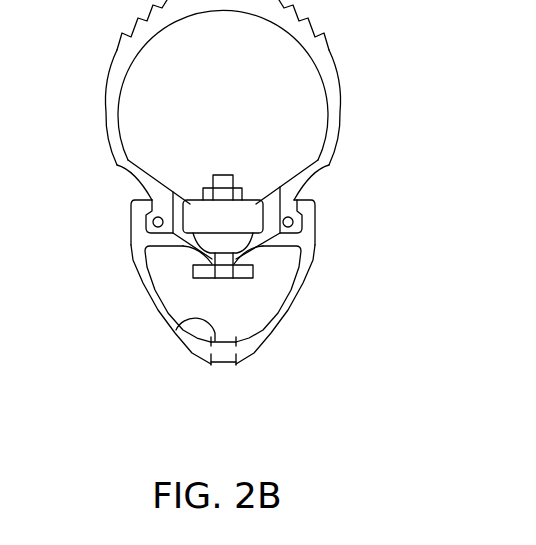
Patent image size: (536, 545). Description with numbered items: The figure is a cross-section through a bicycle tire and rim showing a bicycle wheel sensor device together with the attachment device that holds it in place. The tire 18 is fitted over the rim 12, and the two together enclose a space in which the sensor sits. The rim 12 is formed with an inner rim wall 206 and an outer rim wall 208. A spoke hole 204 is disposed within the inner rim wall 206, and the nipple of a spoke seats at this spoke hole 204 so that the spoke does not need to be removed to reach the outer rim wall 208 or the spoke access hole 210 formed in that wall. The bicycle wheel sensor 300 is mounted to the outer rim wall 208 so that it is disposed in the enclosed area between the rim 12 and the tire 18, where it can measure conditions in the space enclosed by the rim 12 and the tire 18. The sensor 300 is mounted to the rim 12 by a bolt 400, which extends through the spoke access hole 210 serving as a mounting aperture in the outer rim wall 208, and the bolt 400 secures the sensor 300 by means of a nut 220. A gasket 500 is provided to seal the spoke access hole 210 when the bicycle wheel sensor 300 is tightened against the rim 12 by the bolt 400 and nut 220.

The rim 12 is at (315, 262).
The tire 18 is at (331, 43).
The spoke hole 204 is at (176, 330).
The inner rim wall 206 is at (273, 331).
The outer rim wall 208 is at (145, 260).
The spoke access hole 210 is at (158, 293).
The nut 220 is at (193, 205).
The bicycle wheel sensor 300 is at (128, 175).
The bolt 400 is at (254, 272).
The gasket 500 is at (294, 224).